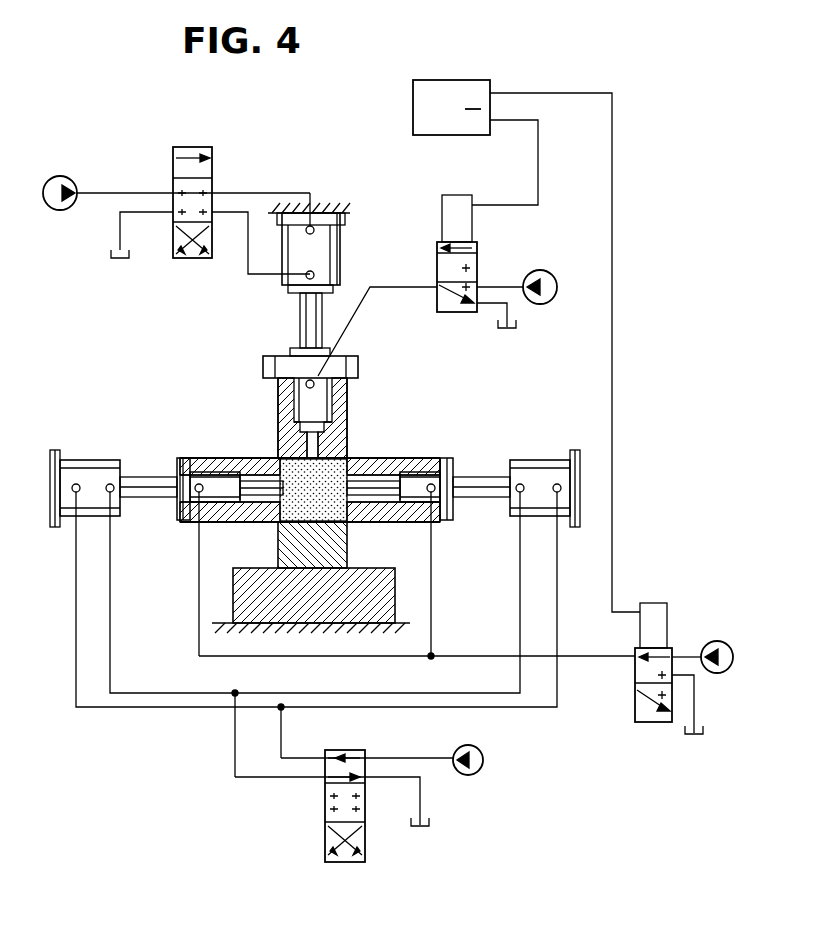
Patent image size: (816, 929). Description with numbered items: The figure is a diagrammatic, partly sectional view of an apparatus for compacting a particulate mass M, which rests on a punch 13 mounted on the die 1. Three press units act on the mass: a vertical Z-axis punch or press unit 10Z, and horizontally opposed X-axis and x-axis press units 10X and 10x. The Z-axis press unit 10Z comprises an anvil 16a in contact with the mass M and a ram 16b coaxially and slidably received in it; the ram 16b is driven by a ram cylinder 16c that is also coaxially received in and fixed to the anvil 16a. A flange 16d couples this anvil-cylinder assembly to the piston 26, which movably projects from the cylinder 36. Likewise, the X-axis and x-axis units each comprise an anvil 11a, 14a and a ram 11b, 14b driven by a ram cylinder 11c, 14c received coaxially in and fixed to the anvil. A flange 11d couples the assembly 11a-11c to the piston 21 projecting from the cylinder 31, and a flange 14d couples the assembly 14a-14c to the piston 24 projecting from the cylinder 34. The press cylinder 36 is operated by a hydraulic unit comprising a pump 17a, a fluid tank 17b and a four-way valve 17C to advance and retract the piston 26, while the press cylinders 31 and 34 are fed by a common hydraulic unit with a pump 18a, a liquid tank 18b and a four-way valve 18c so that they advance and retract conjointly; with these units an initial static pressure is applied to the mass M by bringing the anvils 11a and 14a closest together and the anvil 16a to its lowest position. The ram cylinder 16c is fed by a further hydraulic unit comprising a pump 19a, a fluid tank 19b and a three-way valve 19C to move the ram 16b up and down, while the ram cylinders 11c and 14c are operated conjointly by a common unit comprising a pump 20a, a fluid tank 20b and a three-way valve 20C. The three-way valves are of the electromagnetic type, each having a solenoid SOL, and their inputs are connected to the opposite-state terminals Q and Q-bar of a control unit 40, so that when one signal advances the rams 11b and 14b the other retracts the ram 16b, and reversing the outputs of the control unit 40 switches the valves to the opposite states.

The die 1 is at (324, 618).
The X-axis press unit 10X is at (210, 530).
The x-axis press unit 10x is at (437, 537).
The Z-axis punch or press unit 10Z is at (362, 380).
The anvil 11a is at (255, 472).
The ram 11b is at (250, 470).
The ram cylinder 11c is at (215, 505).
The flange 11d is at (184, 458).
The punch 13 is at (280, 545).
The anvil 14a is at (368, 470).
The ram 14b is at (447, 458).
The ram cylinder 14c is at (410, 510).
The flange 14d is at (450, 520).
The anvil 16a is at (345, 425).
The ram 16b is at (305, 442).
The ram cylinder 16c is at (292, 415).
The flange 16d is at (280, 364).
The pump 17a is at (60, 178).
The fluid (oil) tank 17b is at (112, 250).
The four-way valve 17C is at (204, 148).
The pump 18a is at (483, 760).
The liquid tank 18b is at (430, 820).
The four-way valve 18c is at (322, 826).
The pump 19a is at (548, 272).
The fluid tank 19b is at (514, 318).
The three-way valve 19C is at (480, 178).
The pump 20a is at (724, 646).
The fluid tank 20b is at (706, 726).
The three-way valve 20C is at (674, 638).
The piston 21 is at (145, 478).
The piston 24 is at (483, 478).
The piston 26 is at (300, 312).
The cylinder 31 is at (62, 532).
The cylinder 34 is at (583, 491).
The cylinder 36 is at (345, 235).
The control unit 40 is at (450, 80).
The particulate mass M is at (290, 510).
The solenoid SOL is at (470, 230).